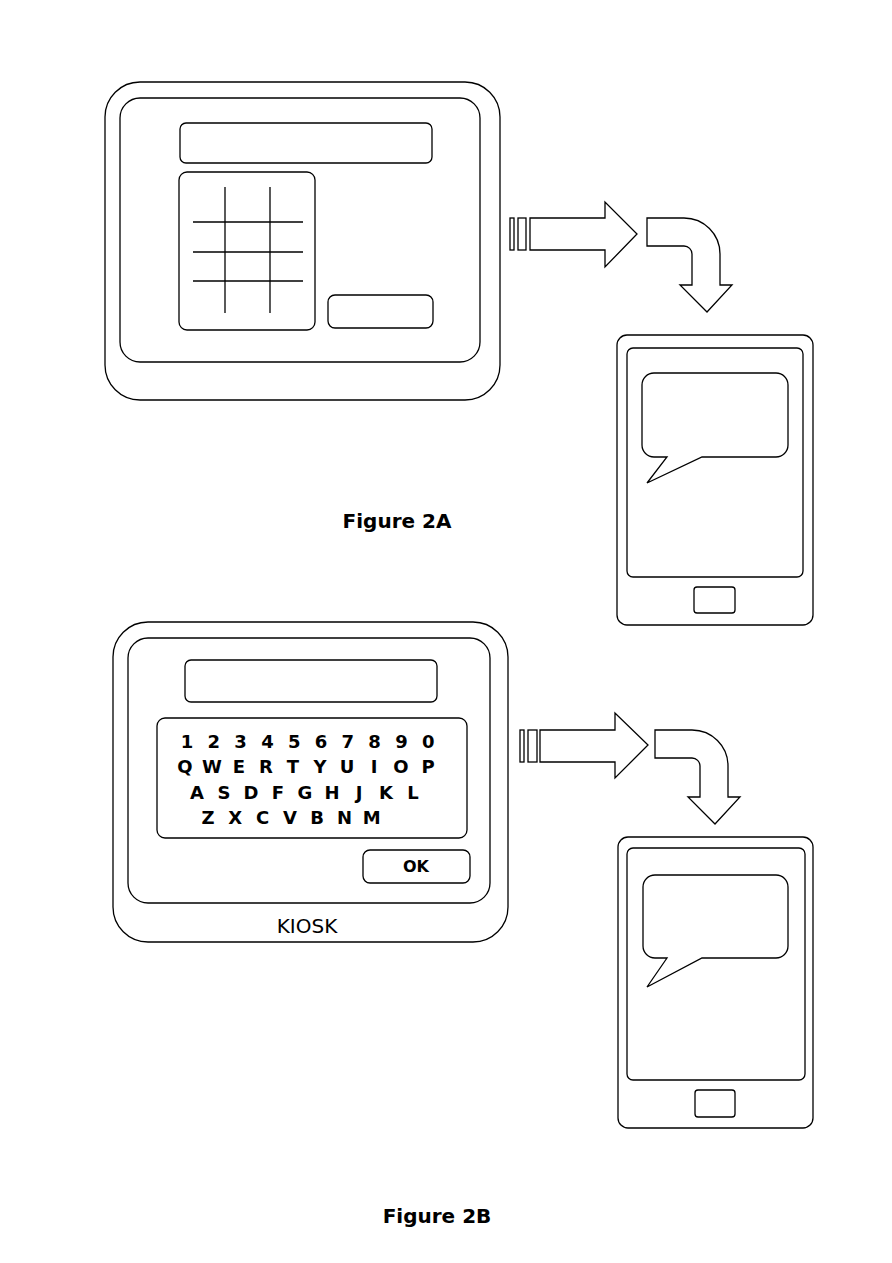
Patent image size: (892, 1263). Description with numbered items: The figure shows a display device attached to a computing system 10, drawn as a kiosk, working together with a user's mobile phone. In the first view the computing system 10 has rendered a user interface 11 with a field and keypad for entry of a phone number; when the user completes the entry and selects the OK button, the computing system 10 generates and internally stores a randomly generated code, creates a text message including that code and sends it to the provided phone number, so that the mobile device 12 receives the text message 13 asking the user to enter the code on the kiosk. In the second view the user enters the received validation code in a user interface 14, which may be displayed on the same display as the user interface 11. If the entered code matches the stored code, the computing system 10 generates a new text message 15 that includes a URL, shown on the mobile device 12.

In FIG. 2A, the computing system 10 is at (319, 200).
In FIG. 2A, the user interface 11 is at (229, 90).
In FIG. 2A, the mobile device 12 is at (726, 399).
In FIG. 2A, the text message 13 is at (640, 451).
In FIG. 2B, the user interface 14 is at (231, 629).
In FIG. 2B, the new text message 15 is at (638, 953).